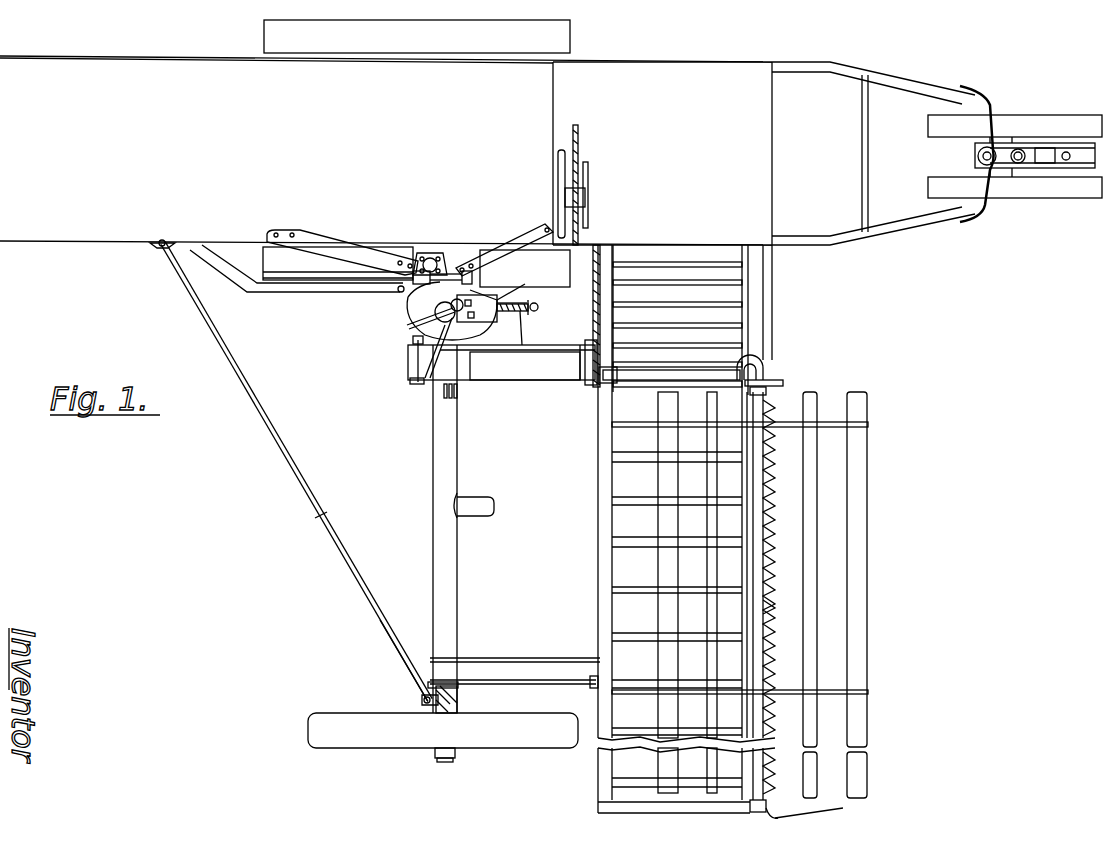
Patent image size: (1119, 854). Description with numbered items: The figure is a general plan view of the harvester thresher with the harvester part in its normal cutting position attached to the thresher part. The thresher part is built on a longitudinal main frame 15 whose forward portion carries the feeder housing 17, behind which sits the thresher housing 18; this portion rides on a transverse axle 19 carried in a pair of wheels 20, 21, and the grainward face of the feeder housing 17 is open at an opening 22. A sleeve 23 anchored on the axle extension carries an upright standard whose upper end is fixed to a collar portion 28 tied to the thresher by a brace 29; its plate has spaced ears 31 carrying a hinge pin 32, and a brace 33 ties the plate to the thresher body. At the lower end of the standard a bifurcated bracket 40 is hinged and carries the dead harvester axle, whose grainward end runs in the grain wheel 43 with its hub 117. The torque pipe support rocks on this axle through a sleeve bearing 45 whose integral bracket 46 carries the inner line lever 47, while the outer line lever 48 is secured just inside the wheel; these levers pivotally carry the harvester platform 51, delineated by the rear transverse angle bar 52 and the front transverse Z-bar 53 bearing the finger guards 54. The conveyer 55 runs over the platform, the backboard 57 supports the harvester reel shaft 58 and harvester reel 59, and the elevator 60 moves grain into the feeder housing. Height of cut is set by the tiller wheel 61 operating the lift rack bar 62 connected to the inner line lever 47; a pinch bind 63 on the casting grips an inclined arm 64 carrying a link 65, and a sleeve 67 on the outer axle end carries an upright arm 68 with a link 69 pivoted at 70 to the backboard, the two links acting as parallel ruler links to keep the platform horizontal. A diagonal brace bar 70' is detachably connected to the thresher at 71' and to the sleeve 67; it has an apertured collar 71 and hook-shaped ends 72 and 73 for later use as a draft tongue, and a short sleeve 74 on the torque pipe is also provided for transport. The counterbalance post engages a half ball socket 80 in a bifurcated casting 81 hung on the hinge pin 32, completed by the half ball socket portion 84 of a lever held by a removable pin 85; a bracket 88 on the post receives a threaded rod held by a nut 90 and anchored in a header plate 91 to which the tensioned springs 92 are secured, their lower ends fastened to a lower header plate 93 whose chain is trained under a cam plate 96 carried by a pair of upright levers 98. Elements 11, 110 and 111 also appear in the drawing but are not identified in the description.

The supporting beam 11 is at (452, 593).
The main frame 15 is at (826, 250).
The feeder housing 17 is at (683, 63).
The thresher housing 18 is at (39, 238).
The transverse axle 19 is at (432, 60).
The wheel 20 is at (572, 37).
The wheel 21 is at (320, 268).
The opening 22 is at (702, 252).
The sleeve 23 is at (408, 283).
The collar portion 28 is at (428, 256).
The brace 29 is at (331, 246).
The ears 31 is at (484, 252).
The hinge pin 32 is at (539, 308).
The brace 33 is at (258, 291).
The bifurcated bracket 40 is at (412, 313).
The grain wheel 43 is at (330, 713).
The sleeve bearing 45 is at (470, 381).
The arm or bracket 46 is at (527, 381).
The inner line lever 47 is at (580, 381).
The outer line lever 48 is at (590, 658).
The harvester platform 51 is at (598, 571).
The rear transverse angle bar 52 is at (480, 298).
The front transverse Z-bar 53 is at (757, 549).
The finger guards 54 is at (768, 598).
The conveyer 55 is at (612, 521).
The backboard 57 is at (612, 468).
The harvester reel shaft 58 is at (768, 506).
The harvester reel 59 is at (862, 556).
The elevator or spout conveyer structure 60 is at (745, 297).
The tiller wheel 61 is at (558, 168).
The lift rack bar 62 is at (579, 140).
The pinch bind 63 is at (410, 349).
The arm 64 is at (414, 362).
The link 65 is at (574, 382).
The sleeve 67 is at (459, 700).
The stationary upright arm 68 is at (460, 686).
The link 69 is at (540, 685).
The pivot 70 is at (582, 693).
The diagonal brace bar 70' is at (392, 660).
The apertured collar 71 is at (331, 530).
The connection point 71' is at (149, 253).
The hook-shaped end 72 is at (163, 250).
The hook-shaped end 73 is at (423, 700).
The short sleeve 74 is at (483, 514).
The half ball socket 80 is at (436, 262).
The casting 81 is at (456, 272).
The half ball socket portion 84 is at (440, 340).
The removable pin 85 is at (406, 326).
The bracket 88 is at (481, 323).
The nut 90 is at (447, 328).
The header plate 91 is at (490, 300).
The tensioned springs 92 is at (501, 313).
The lower header plate 93 is at (497, 282).
The cam plate 96 is at (532, 312).
The upright levers 98 is at (522, 314).
The pin 110 is at (458, 400).
The pin 111 is at (448, 391).
The hub 117 is at (436, 757).